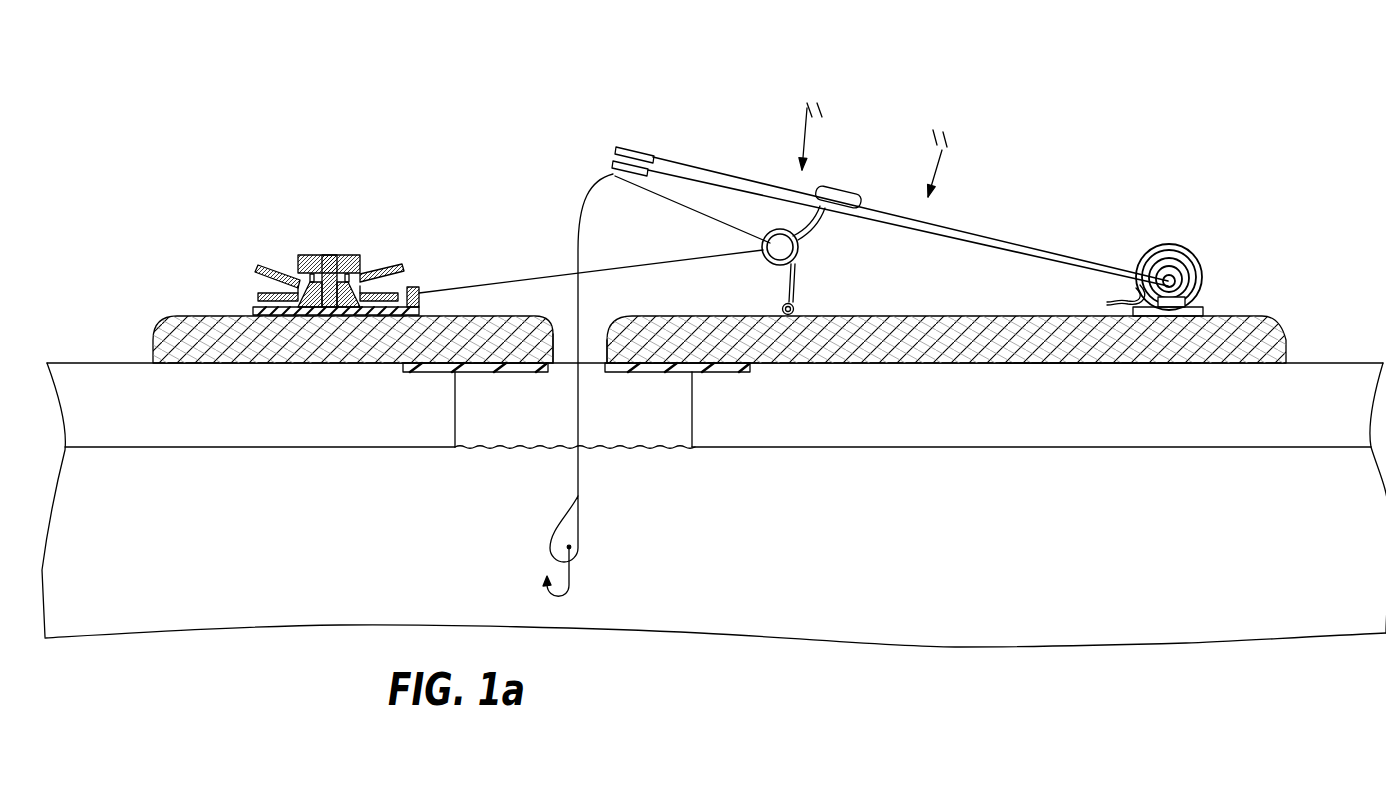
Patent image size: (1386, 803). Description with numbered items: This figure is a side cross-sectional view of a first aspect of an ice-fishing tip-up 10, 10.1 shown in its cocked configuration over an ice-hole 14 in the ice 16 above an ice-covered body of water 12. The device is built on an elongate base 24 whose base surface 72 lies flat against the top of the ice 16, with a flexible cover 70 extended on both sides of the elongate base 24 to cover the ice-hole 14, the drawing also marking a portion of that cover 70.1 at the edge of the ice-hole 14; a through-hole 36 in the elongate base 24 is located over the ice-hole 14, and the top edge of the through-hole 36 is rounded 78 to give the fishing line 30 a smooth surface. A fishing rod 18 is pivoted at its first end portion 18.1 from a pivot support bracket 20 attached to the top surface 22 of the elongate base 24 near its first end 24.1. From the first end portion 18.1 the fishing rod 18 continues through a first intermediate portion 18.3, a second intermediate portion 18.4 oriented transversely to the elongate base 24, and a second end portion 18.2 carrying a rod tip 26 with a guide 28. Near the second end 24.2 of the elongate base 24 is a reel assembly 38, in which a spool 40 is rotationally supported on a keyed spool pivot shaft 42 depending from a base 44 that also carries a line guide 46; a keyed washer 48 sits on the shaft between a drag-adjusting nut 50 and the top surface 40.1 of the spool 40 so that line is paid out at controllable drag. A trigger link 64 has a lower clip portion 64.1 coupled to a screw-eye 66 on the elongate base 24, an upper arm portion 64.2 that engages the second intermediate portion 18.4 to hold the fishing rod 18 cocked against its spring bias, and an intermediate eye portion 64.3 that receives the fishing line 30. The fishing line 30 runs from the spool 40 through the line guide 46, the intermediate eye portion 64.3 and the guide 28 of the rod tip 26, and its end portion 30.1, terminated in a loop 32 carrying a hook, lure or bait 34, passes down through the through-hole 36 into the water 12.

The ice-fishing tip-up 10 is at (708, 322).
The ice-fishing tip-up, first aspect 10.1 is at (227, 112).
The ice-covered body of water 12 is at (1272, 574).
The ice-hole 14 is at (692, 402).
The ice 16 is at (256, 416).
The fishing rod 18 is at (914, 184).
The first end portion of the fishing rod 18.1 is at (1192, 274).
The second end portion of the fishing rod 18.2 is at (705, 135).
The first intermediate portion of the fishing rod 18.3 is at (1030, 247).
The second intermediate portion of the fishing rod 18.4 is at (835, 205).
The pivot support bracket 20 is at (1207, 312).
The top surface of the elongate base 22 is at (893, 317).
The elongate base 24 is at (746, 291).
The first end of the elongate base 24.1 is at (1227, 287).
The second end of the elongate base 24.2 is at (193, 302).
The rod tip 26 is at (618, 150).
The guide 28 is at (613, 167).
The fishing line 30 is at (495, 283).
The end portion of the fishing line 30.1 is at (580, 527).
The loop 32 is at (617, 529).
The hook, lure or bait 34 is at (570, 580).
The through-hole 36 is at (558, 345).
The reel assembly 38 is at (292, 238).
The spool 40 is at (359, 256).
The top surface of the spool 40.1 is at (360, 283).
The keyed spool pivot shaft 42 is at (330, 253).
The base 44 is at (253, 310).
The line guide 46 is at (420, 312).
The keyed washer 48 is at (307, 278).
The drag-adjusting nut 50 is at (308, 253).
The trigger link 64 is at (790, 216).
The clip portion of the trigger link 64.1 is at (792, 290).
The arm portion of the trigger link 64.2 is at (833, 203).
The intermediate eye portion of the trigger link 64.3 is at (773, 237).
The screw-eye 66 is at (780, 307).
The flexible cover 70 is at (625, 402).
The support plate edge 70.1 is at (717, 373).
The base surface of the elongate base 72 is at (1100, 365).
The rounded top edge of the through-hole 78 is at (598, 330).